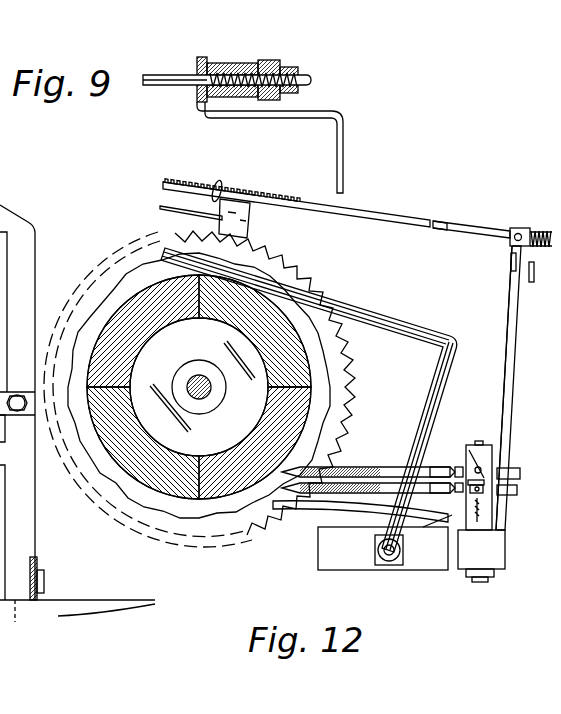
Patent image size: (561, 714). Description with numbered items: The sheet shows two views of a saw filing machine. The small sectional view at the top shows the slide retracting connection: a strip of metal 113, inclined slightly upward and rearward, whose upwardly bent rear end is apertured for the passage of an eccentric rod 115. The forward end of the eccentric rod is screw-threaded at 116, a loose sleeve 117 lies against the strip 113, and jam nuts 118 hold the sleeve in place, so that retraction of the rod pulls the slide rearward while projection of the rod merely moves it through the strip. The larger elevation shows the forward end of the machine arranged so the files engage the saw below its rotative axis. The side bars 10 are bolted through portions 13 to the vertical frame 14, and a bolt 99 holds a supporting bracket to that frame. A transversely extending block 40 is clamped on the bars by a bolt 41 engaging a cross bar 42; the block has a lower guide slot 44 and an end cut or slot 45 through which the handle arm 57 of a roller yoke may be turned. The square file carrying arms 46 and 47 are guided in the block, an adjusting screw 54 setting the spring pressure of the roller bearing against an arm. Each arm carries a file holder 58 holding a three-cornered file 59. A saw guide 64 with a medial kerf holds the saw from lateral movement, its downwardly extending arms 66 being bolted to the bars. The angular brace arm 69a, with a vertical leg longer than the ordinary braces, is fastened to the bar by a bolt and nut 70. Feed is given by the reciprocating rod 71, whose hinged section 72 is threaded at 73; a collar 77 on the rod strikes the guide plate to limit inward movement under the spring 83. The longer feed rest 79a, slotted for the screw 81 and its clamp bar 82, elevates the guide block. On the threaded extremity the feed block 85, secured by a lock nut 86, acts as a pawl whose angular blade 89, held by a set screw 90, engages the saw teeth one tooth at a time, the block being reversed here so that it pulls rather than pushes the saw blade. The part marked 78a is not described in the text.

In FIG. 12, the side bars 10 is at (321, 554).
In FIG. 12, the portions 13 is at (38, 561).
In FIG. 12, the frame 14 is at (43, 527).
In FIG. 12, the block 40 is at (490, 445).
In FIG. 12, the bolt 41 is at (471, 582).
In FIG. 12, the cross bar 42 is at (462, 572).
In FIG. 12, the guide slot 44 is at (478, 506).
In FIG. 12, the slot 45 is at (486, 491).
In FIG. 12, the file carrying arm 46 is at (445, 467).
In FIG. 12, the file carrying arm 47 is at (458, 482).
In FIG. 12, the adjusting screw 54 is at (474, 448).
In FIG. 12, the arm 57 is at (486, 483).
In FIG. 12, the file holder 58 is at (398, 483).
In FIG. 12, the file 59 is at (362, 470).
In FIG. 12, the saw guide 64 is at (318, 509).
In FIG. 12, the arms 66 is at (432, 530).
In FIG. 12, the brace arm 69a is at (432, 421).
In FIG. 12, the bolt and nut 70 is at (398, 564).
In FIG. 12, the reciprocating rod 71 is at (476, 231).
In FIG. 12, the rod section 72 is at (372, 216).
In FIG. 12, the screw-threaded extremity 73 is at (298, 201).
In FIG. 12, the collar 77 is at (519, 228).
In FIG. 12, the lug 78a is at (512, 256).
In FIG. 12, the guide 79a is at (510, 316).
In FIG. 12, the screw 81 is at (521, 292).
In FIG. 12, the clamp bar 82 is at (512, 270).
In FIG. 12, the spring 83 is at (543, 231).
In FIG. 12, the block 85 is at (160, 208).
In FIG. 12, the lock nut 86 is at (222, 187).
In FIG. 12, the blade 89 is at (263, 238).
In FIG. 12, the set screw 90 is at (250, 216).
In FIG. 12, the bolt 99 is at (17, 393).
In FIG. 9, the strip of metal 113 is at (279, 127).
In FIG. 9, the eccentric rod 115 is at (190, 90).
In FIG. 9, the screw-threaded portion 116 is at (295, 68).
In FIG. 9, the loose sleeve 117 is at (232, 63).
In FIG. 9, the jam nuts 118 is at (276, 61).